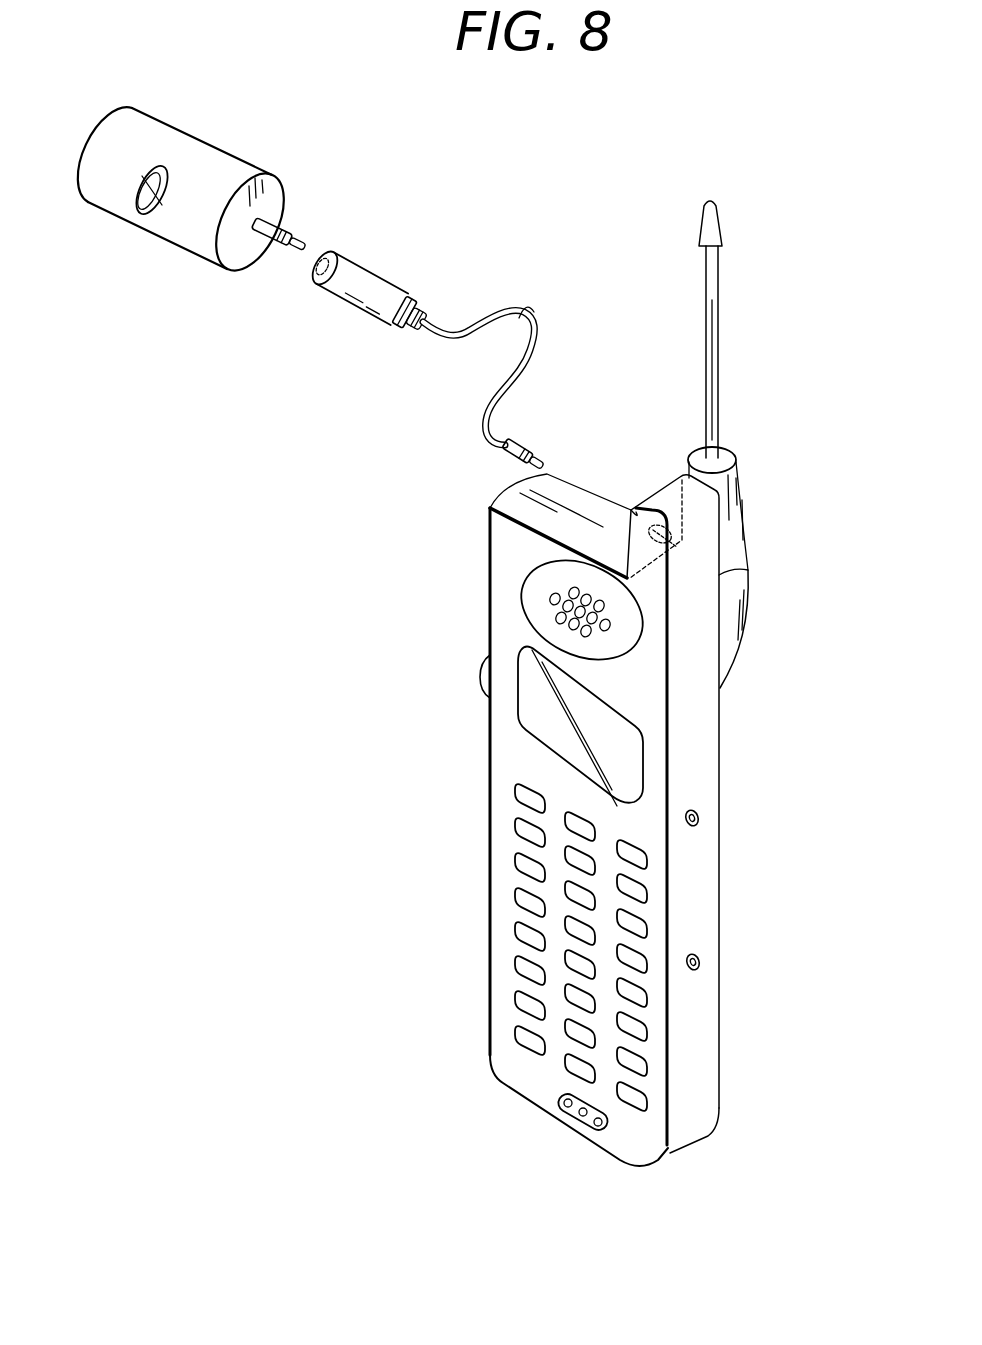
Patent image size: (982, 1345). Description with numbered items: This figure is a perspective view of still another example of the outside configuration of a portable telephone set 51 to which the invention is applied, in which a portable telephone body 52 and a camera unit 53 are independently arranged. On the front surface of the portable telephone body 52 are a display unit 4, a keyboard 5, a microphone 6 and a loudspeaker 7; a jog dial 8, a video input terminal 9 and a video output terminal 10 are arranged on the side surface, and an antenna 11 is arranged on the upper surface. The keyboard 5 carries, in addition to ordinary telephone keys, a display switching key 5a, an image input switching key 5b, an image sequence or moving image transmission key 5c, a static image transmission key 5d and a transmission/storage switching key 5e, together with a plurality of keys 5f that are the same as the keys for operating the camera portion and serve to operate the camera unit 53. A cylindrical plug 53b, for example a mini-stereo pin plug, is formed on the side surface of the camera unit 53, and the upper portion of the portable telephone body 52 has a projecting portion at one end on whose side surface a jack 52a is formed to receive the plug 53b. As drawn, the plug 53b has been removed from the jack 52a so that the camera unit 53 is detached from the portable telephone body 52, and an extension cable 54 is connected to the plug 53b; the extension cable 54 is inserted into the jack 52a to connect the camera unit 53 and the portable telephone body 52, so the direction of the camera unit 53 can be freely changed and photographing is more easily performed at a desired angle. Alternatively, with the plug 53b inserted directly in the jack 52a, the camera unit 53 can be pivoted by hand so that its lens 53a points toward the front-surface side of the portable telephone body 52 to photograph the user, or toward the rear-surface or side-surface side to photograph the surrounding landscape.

The camera unit 53 is at (165, 115).
The lens 53a is at (143, 208).
The cylindrical plug 53b is at (290, 232).
The extension cable 54 is at (347, 300).
The jack 52a is at (633, 503).
The portable telephone body 52 is at (720, 765).
The portable telephone set 51 is at (583, 744).
The antenna 11 is at (718, 325).
The loudspeaker 7 is at (597, 612).
The display unit 4 is at (640, 713).
The jog dial 8 is at (490, 672).
The video output terminal 10 is at (698, 822).
The video input terminal 9 is at (697, 953).
The keyboard 5 is at (601, 990).
The display switching key 5a is at (547, 978).
The image input switching key 5b is at (597, 1003).
The moving image transmission key 5c is at (650, 1073).
The static image transmission key 5d is at (650, 1110).
The transmission/storage switching key 5e is at (647, 1038).
The keys for operating the camera unit 5f is at (499, 1049).
The microphone 6 is at (567, 1115).